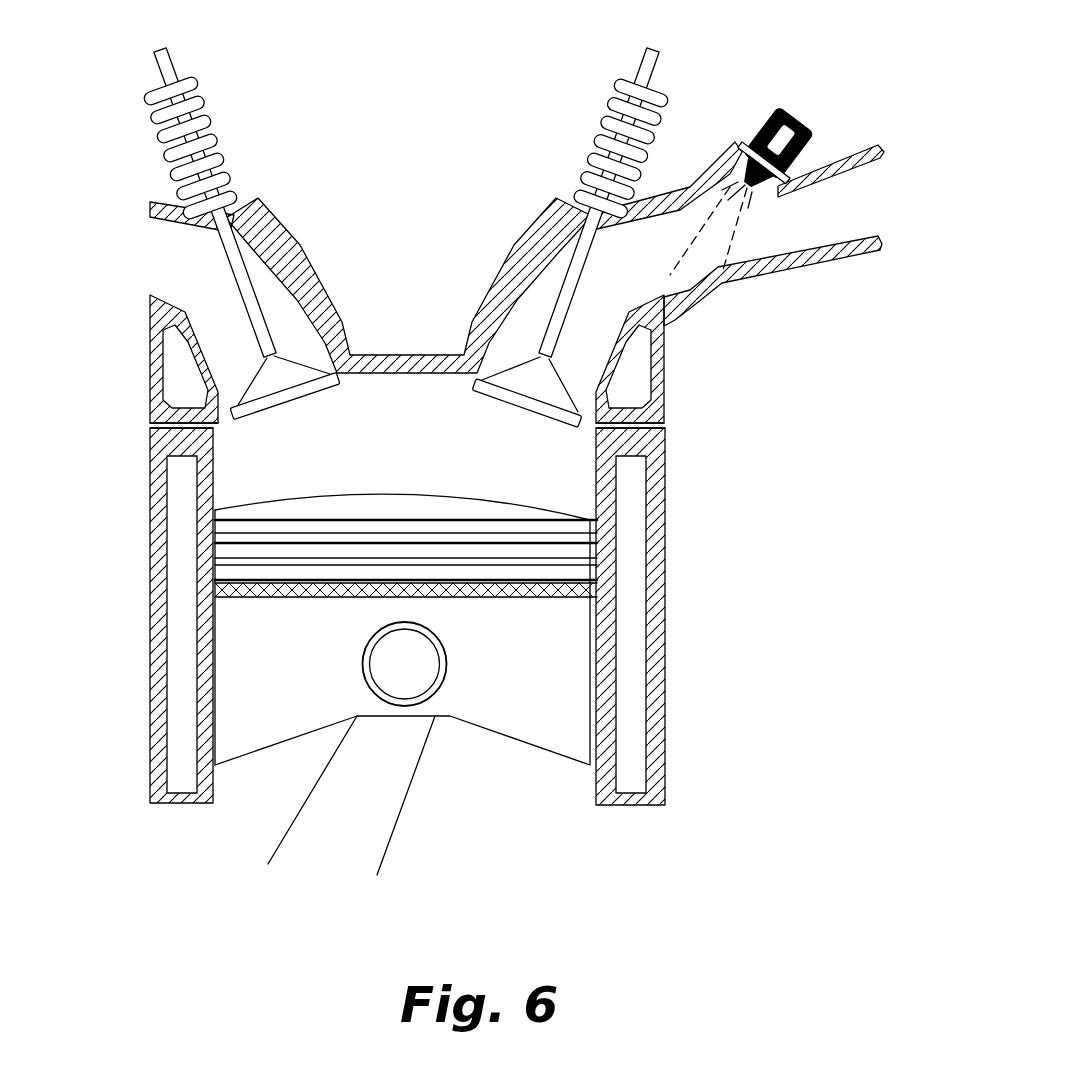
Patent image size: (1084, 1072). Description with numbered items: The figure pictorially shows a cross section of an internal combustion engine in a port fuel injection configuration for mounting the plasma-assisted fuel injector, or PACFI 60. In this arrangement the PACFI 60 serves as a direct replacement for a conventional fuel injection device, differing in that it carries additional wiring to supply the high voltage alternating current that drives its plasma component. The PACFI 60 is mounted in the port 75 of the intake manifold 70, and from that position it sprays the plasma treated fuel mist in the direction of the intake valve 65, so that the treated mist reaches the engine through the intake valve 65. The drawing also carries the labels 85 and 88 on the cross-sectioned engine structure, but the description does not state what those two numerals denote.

The fuel injector 60 is at (793, 116).
The exhaust valve 65 is at (573, 336).
The exhaust port 70 is at (786, 284).
The intake port 75 is at (845, 172).
The cylinder head 85 is at (140, 352).
The combustion chamber 88 is at (557, 472).